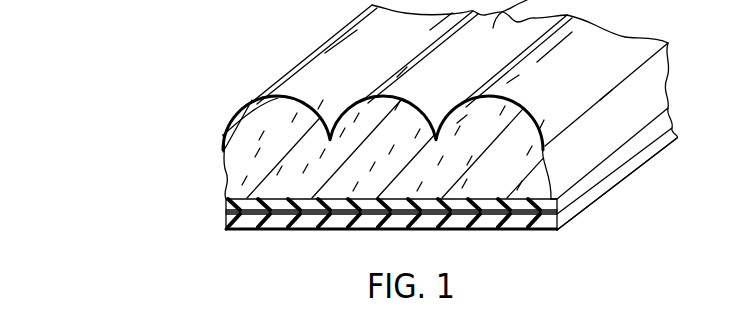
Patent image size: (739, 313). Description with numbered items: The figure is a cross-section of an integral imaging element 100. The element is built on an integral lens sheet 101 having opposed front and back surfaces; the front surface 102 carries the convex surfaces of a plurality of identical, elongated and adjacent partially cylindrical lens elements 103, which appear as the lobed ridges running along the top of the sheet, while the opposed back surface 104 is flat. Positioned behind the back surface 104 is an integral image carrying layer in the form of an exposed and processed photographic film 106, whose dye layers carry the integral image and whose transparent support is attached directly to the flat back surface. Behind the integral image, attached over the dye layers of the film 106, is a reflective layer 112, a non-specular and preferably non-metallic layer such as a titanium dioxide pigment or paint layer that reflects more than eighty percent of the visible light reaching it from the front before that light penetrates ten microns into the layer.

The integral imaging element 100 is at (177, 195).
The integral lens sheet 101 is at (225, 168).
The front surface 102 is at (226, 129).
The partially cylindrical lens elements 103 is at (307, 80).
The back surface 104 is at (485, 199).
The photographic film 106 is at (227, 210).
The reflective layer 112 is at (262, 231).